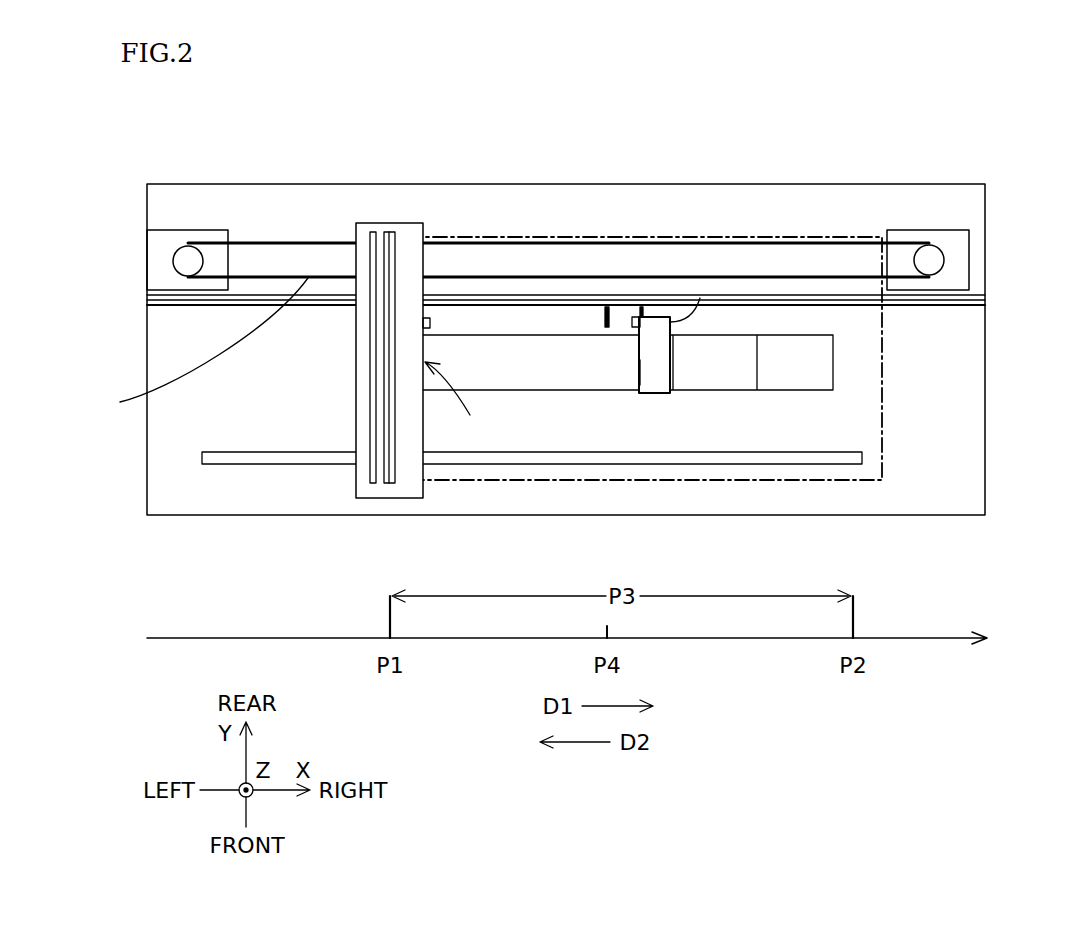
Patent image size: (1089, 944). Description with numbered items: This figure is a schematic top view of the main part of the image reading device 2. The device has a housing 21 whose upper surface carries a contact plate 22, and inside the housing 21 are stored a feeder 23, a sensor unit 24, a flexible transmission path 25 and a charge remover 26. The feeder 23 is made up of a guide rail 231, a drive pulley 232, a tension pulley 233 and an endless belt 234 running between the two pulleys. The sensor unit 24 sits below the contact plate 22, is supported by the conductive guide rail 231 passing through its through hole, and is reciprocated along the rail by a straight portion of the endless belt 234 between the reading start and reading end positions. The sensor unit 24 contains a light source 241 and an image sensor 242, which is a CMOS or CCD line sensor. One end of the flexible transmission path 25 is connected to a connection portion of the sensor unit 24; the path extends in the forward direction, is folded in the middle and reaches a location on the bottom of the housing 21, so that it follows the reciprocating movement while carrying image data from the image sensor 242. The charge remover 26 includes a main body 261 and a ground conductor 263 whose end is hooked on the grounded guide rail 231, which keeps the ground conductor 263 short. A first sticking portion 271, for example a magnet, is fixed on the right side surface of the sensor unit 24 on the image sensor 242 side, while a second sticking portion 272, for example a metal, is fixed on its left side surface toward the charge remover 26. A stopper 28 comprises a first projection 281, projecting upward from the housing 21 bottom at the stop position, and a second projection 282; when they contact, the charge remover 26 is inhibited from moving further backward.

The image reading device 2 is at (123, 146).
The housing 21 is at (987, 332).
The contact plate 22 is at (765, 237).
The feeder 23 is at (842, 787).
The guide rail 231 is at (925, 303).
The drive pulley 232 is at (929, 252).
The tension pulley 233 is at (187, 263).
The endless belt 234 is at (253, 290).
The sensor unit 24 is at (388, 223).
The light source 241 is at (372, 483).
The image sensor 242 is at (392, 483).
The flexible transmission path 25 is at (833, 360).
The charge remover 26 is at (663, 416).
The main body 261 is at (641, 372).
The ground conductor 263 is at (700, 298).
The first sticking portion 271 is at (428, 318).
The second sticking portion 272 is at (633, 322).
The stopper 28 is at (697, 95).
The first projection 281 is at (607, 307).
The second projection 282 is at (643, 307).